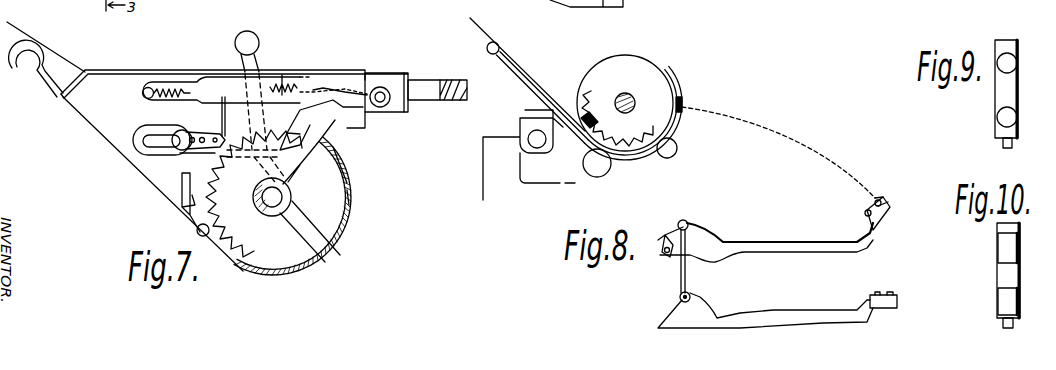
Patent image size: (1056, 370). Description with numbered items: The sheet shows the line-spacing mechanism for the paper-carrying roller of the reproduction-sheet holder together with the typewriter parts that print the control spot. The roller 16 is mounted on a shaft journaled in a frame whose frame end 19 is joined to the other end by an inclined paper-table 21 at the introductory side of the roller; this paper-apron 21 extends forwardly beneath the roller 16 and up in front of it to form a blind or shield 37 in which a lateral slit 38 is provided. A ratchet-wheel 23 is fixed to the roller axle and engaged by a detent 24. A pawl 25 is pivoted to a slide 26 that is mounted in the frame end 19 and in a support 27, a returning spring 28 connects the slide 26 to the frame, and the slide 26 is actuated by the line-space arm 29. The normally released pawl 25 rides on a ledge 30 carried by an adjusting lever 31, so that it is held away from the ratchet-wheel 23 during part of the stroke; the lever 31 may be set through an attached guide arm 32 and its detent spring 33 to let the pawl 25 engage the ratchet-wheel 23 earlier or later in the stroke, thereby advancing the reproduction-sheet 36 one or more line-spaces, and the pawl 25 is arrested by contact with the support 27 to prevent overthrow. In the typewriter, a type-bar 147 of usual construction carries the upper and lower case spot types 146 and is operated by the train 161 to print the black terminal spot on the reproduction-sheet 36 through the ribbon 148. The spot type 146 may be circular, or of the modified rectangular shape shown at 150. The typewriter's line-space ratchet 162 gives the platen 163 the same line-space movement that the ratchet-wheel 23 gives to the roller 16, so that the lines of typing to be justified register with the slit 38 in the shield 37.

In FIG. 7, the roller 16 is at (310, 191).
In FIG. 7, the frame end 19 is at (85, 98).
In FIG. 7, the inclined paper-table 21 is at (51, 93).
In FIG. 7, the ratchet-wheel 23 is at (254, 193).
In FIG. 7, the detent 24 is at (182, 192).
In FIG. 7, the pawl 25 is at (317, 111).
In FIG. 7, the slide 26 is at (255, 90).
In FIG. 7, the support 27 is at (222, 113).
In FIG. 7, the returning spring 28 is at (163, 87).
In FIG. 7, the line-space arm 29 is at (436, 82).
In FIG. 7, the ledge 30 is at (253, 131).
In FIG. 7, the adjusting lever 31 is at (259, 47).
In FIG. 7, the guide arm 32 is at (138, 130).
In FIG. 7, the detent spring 33 is at (183, 148).
In FIG. 7, the reproduction-sheet 36 is at (64, 60).
In FIG. 8, the reproduction-sheet 36 is at (636, 60).
In FIG. 7, the shield 37 is at (338, 163).
In FIG. 7, the lateral slit 38 is at (353, 203).
In FIG. 8, the spot type 146 is at (870, 197).
In FIG. 9, the spot type 146 is at (1000, 110).
In FIG. 8, the type-bar 147 is at (795, 241).
In FIG. 9, the type-bar 147 is at (1002, 145).
In FIG. 10, the type-bar 147 is at (1002, 323).
In FIG. 8, the ribbon 148 is at (677, 98).
In FIG. 10, the rectangular spot 150 is at (1000, 293).
In FIG. 8, the train 161 is at (673, 268).
In FIG. 8, the line-space ratchet 162 is at (630, 148).
In FIG. 8, the platen 163 is at (608, 62).